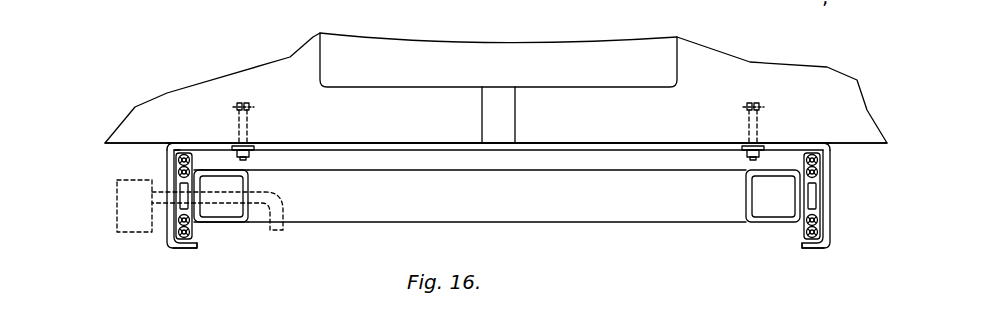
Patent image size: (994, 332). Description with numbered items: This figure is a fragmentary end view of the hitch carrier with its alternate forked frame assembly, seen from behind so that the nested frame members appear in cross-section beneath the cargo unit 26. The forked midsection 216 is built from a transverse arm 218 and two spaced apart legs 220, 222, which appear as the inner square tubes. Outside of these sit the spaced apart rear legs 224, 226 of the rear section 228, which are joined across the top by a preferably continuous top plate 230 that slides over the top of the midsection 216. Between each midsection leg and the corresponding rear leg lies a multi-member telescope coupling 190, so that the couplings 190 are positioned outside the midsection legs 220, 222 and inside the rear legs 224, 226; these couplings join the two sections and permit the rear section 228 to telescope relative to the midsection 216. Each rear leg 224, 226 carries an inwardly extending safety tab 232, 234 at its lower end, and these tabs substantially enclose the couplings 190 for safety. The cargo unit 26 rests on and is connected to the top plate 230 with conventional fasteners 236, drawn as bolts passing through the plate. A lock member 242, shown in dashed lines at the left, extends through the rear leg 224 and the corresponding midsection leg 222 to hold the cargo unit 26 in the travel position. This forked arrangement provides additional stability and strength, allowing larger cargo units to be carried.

The cargo unit 26 is at (710, 58).
The multi-member telescope couplings 190 is at (193, 236).
The forked midsection 216 is at (233, 0).
The transverse arm 218 is at (590, 213).
The midsection leg 220 is at (763, 222).
The midsection leg 222 is at (218, 168).
The rear leg 224 is at (165, 160).
The rear leg 226 is at (831, 176).
The rear section 228 is at (541, 128).
The top plate 230 is at (350, 147).
The safety tab 232 is at (175, 252).
The safety tab 234 is at (817, 248).
The fasteners 236 is at (762, 103).
The lock member 242 is at (127, 208).